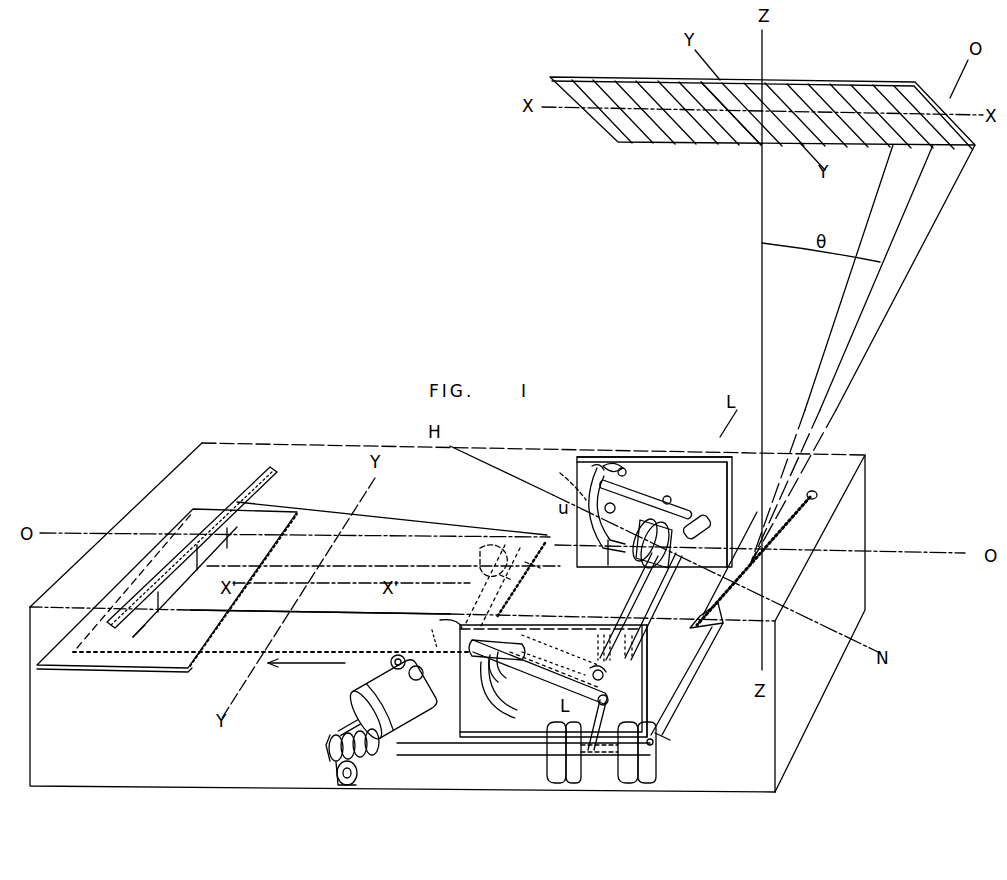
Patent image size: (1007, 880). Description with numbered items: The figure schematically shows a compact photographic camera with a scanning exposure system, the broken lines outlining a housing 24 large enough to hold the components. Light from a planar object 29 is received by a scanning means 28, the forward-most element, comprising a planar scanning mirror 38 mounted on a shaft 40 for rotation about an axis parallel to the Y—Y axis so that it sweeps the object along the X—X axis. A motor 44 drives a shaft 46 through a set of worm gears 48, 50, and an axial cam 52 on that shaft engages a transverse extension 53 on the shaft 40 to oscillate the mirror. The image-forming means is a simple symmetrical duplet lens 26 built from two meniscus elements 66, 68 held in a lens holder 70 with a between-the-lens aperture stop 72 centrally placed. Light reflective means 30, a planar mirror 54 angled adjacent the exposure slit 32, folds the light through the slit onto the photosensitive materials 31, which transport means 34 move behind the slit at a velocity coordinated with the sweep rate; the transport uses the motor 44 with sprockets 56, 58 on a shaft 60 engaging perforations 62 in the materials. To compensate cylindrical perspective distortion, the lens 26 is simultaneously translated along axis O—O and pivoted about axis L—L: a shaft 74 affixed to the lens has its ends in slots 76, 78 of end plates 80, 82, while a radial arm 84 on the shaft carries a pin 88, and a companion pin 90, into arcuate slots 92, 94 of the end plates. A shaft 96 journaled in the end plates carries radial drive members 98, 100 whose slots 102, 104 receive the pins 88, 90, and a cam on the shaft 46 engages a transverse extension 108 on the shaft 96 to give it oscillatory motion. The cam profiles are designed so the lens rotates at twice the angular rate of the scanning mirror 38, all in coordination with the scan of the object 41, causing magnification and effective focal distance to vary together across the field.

The housing 24 is at (338, 445).
The lens 26 is at (585, 576).
The scanning means 28 is at (738, 630).
The object 29 is at (858, 80).
The light reflective means 30 is at (268, 462).
The photosensitive materials 31 is at (247, 632).
The exposure slit 32 is at (140, 648).
The transport means 34 is at (345, 684).
The scanning mirror 38 is at (752, 574).
The shaft 40 is at (706, 672).
The object 41 is at (652, 138).
The motor 44 is at (366, 690).
The shaft 46 is at (472, 756).
The worm gear 48 is at (326, 745).
The worm gear 50 is at (335, 775).
The axial cam 52 is at (652, 768).
The transverse extension 53 is at (656, 748).
The planar mirror 54 is at (243, 488).
The sprocket 56 is at (398, 655).
The sprocket 58 is at (478, 575).
The shaft 60 is at (423, 679).
The perforations 62 is at (312, 650).
The meniscus element 66 is at (628, 474).
The meniscus element 68 is at (700, 527).
The lens holder 70 is at (652, 594).
The aperture stop 72 is at (676, 566).
The shaft 74 is at (622, 598).
The slot 76 is at (606, 678).
The slot 78 is at (577, 492).
The end plate 80 is at (647, 652).
The end plate 82 is at (732, 492).
The radial arm 84 is at (563, 630).
The pin 88 is at (502, 678).
The pin 90 is at (600, 465).
The arcuate slot 92 is at (481, 702).
The arcuate slot 94 is at (610, 567).
The shaft 96 is at (610, 703).
The radial drive member 98 is at (556, 688).
The radial drive member 100 is at (640, 455).
The slot 102 is at (460, 620).
The slot 104 is at (600, 455).
The transverse extension 108 is at (550, 768).